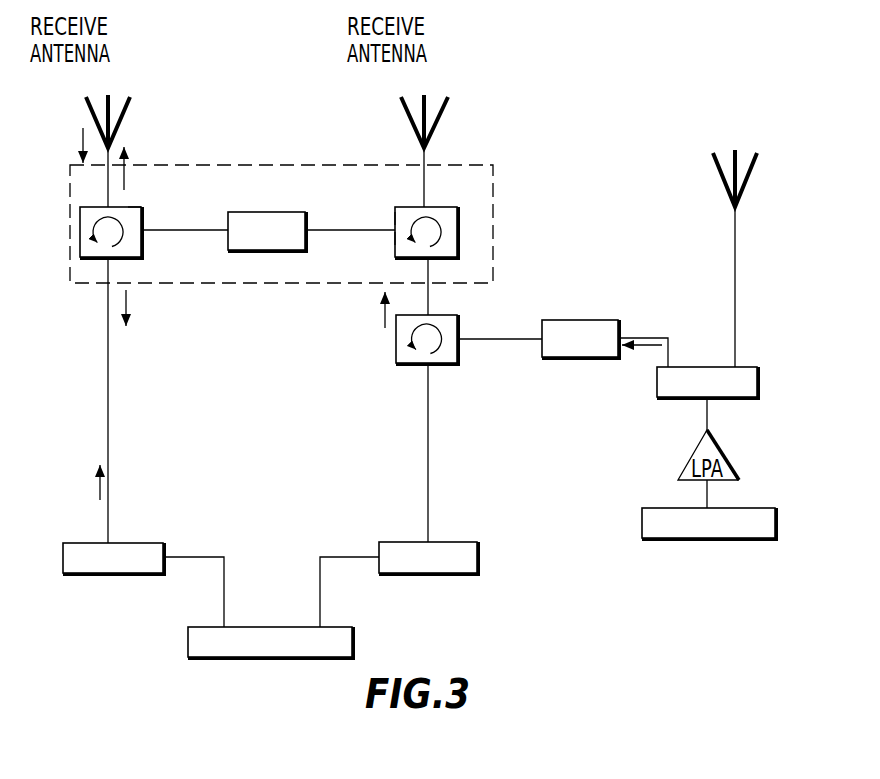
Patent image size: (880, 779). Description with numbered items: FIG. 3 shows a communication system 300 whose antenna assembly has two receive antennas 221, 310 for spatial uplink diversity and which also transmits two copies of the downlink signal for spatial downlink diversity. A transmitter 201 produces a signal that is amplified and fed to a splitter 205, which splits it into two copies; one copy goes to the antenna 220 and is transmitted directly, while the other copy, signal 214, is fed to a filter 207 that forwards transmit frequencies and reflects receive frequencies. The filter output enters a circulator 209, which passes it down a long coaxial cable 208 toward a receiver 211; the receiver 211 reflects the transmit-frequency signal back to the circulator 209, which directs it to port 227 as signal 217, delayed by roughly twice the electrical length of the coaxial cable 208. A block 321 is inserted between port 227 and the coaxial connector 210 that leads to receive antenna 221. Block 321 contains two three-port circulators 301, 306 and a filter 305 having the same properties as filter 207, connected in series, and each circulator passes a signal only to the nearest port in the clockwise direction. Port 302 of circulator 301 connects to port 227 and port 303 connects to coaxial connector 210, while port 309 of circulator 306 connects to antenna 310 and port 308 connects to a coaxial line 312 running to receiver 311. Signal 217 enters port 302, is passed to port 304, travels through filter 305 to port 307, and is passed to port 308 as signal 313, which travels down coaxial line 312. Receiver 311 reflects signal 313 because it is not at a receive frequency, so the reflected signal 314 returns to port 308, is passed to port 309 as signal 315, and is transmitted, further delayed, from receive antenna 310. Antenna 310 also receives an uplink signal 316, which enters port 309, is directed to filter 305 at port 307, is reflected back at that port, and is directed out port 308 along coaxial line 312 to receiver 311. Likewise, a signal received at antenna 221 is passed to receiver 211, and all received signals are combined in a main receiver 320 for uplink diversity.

The communication system 300 is at (584, 660).
The receive antenna 310 is at (99, 96).
The receive antenna 221 is at (413, 96).
The antenna 220 is at (751, 158).
The coaxial connector 210 is at (425, 157).
The received signal 316 is at (82, 140).
The delayed transmit signal 315 is at (126, 160).
The block 321 is at (493, 190).
The port 309 is at (105, 207).
The circulator 306 is at (135, 207).
The port 307 is at (145, 230).
The port 308 is at (115, 258).
The filter 305 is at (262, 212).
The port 303 is at (428, 207).
The circulator 301 is at (395, 212).
The port 304 is at (395, 232).
The port 302 is at (428, 258).
The port 227 is at (432, 315).
The delayed signal 217 is at (385, 322).
The circulator 209 is at (457, 355).
The coaxial cable 208 is at (427, 430).
The filter 207 is at (583, 320).
The signal 214 is at (652, 348).
The splitter 205 is at (757, 380).
The transmitter 201 is at (775, 525).
The coaxial line 312 is at (109, 400).
The signal 313 is at (127, 298).
The reflected signal 314 is at (99, 490).
The receiver 311 is at (63, 555).
The receiver 211 is at (477, 558).
The main receiver 320 is at (188, 647).